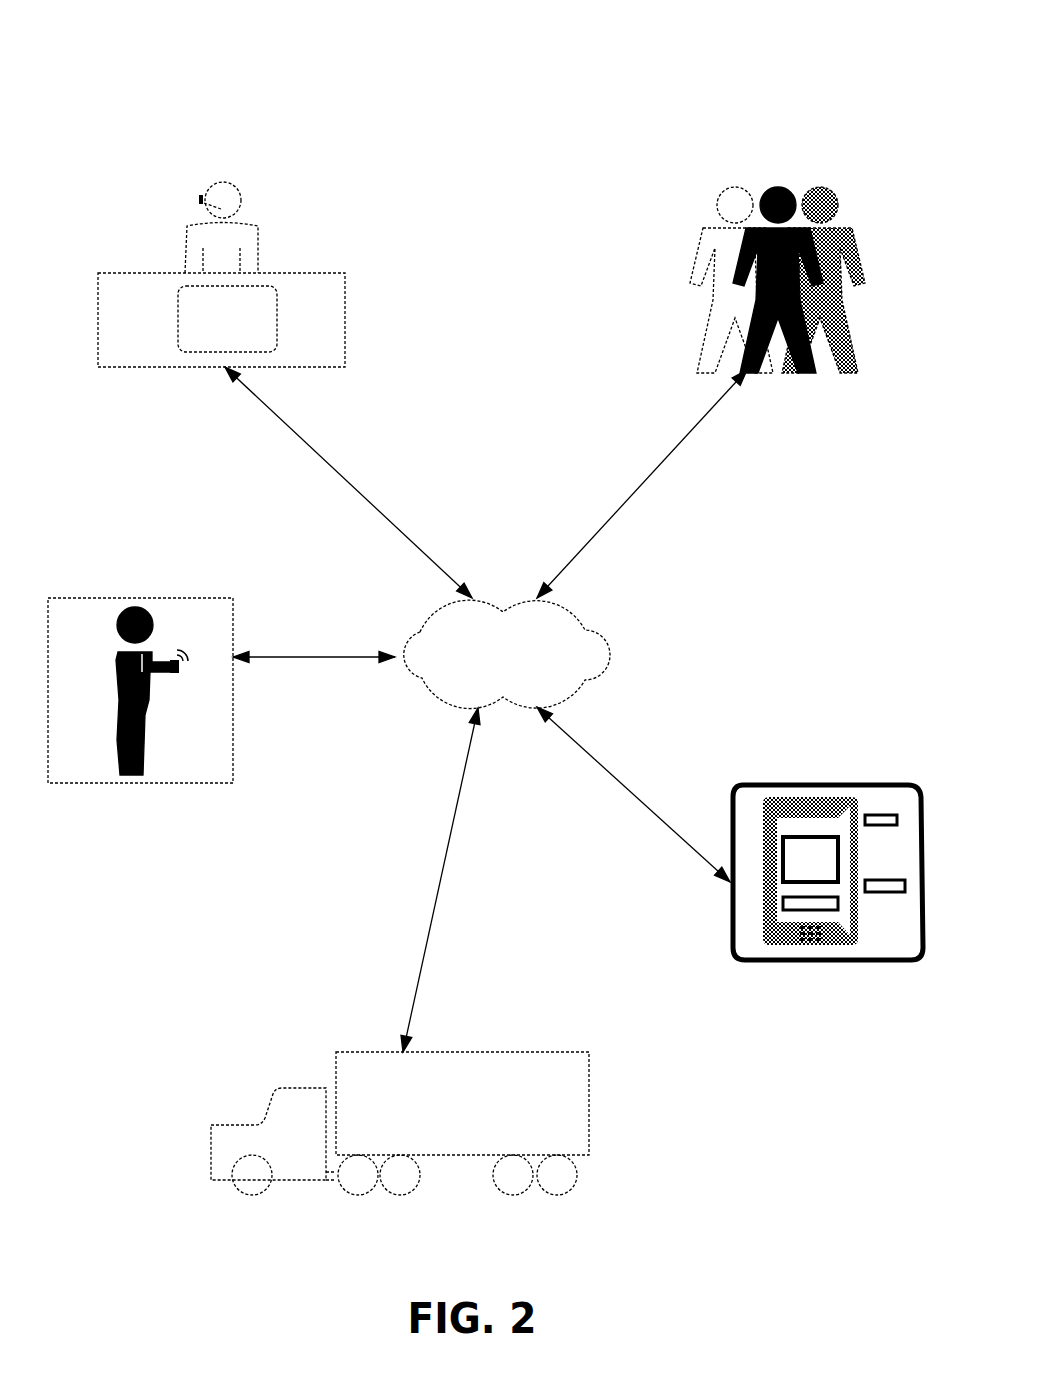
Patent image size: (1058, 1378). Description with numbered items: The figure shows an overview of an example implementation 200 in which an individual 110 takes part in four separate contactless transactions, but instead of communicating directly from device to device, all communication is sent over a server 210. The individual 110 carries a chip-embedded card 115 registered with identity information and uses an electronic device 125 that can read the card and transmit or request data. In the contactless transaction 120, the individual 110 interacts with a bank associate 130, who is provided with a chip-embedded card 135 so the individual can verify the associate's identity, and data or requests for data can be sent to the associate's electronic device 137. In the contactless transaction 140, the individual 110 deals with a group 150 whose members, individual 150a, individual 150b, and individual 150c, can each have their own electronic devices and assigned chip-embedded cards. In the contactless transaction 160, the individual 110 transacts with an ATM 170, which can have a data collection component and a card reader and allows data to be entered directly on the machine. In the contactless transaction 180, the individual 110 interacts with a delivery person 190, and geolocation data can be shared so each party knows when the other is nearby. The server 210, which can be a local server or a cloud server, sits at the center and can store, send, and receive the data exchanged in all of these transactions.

The example implementation 200 is at (784, 48).
The individual 110 is at (145, 597).
The chip-embedded card 115 is at (168, 668).
The electronic device 125 is at (181, 663).
The contactless transaction 120 is at (347, 478).
The bank associate 130 is at (224, 182).
The chip-embedded card 135 is at (190, 272).
The electronic device 137 is at (256, 270).
The contactless transaction 140 is at (643, 478).
The group 150 is at (792, 262).
The individual 150a is at (737, 187).
The individual 150b is at (775, 187).
The individual 150c is at (853, 223).
The contactless transaction 160 is at (632, 790).
The ATM (automated teller machine) 170 is at (825, 783).
The contactless transaction 180 is at (437, 900).
The delivery person 190 is at (472, 1052).
The server 210 is at (613, 650).